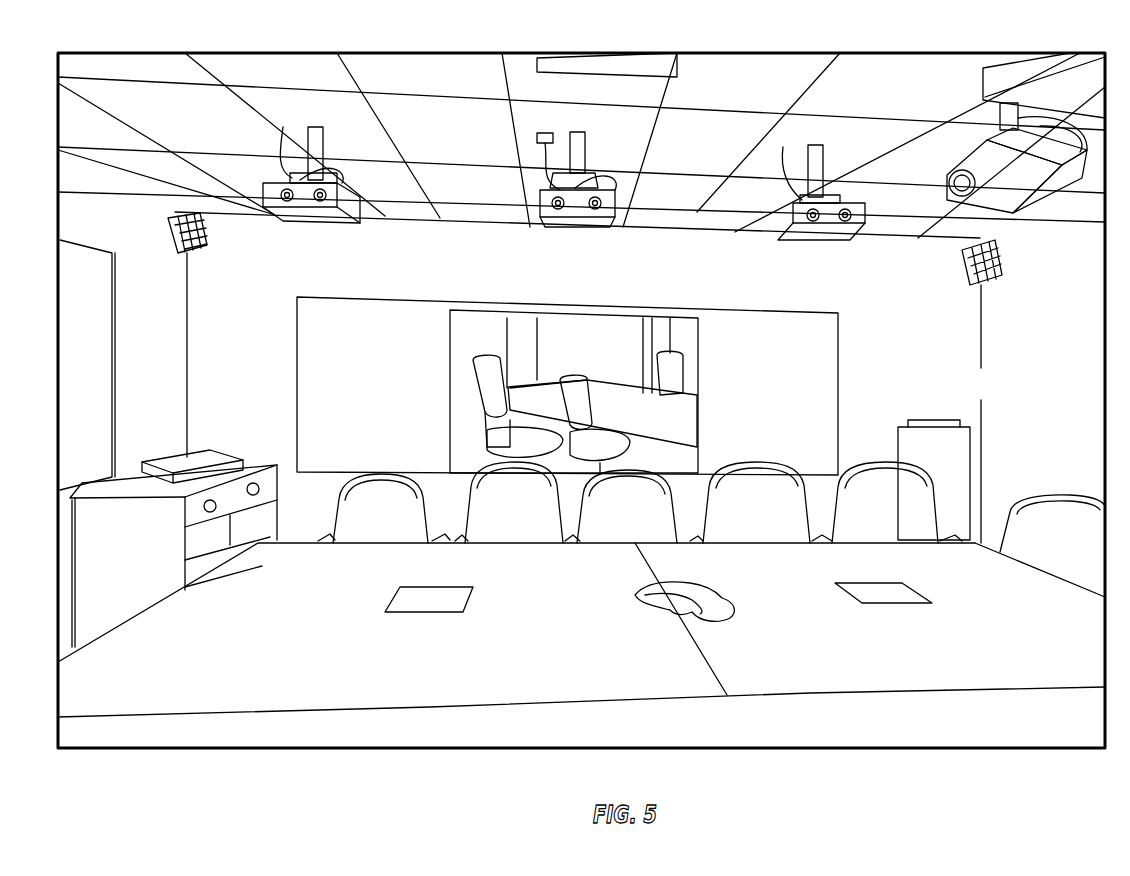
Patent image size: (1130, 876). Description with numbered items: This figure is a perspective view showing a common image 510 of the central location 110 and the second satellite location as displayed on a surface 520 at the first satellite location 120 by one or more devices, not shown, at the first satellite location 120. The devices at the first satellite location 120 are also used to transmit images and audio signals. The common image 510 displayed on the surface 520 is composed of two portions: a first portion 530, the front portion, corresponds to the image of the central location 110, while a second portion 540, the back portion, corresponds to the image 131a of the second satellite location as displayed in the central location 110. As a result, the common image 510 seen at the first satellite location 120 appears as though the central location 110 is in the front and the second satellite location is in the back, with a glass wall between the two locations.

The common image 510 is at (473, 48).
The first satellite location 120 is at (348, 752).
The first portion 530 is at (313, 592).
The central location 110 is at (603, 600).
The second portion 540 is at (412, 391).
The surface 520 is at (997, 399).
The image of the second satellite location 131a is at (807, 317).